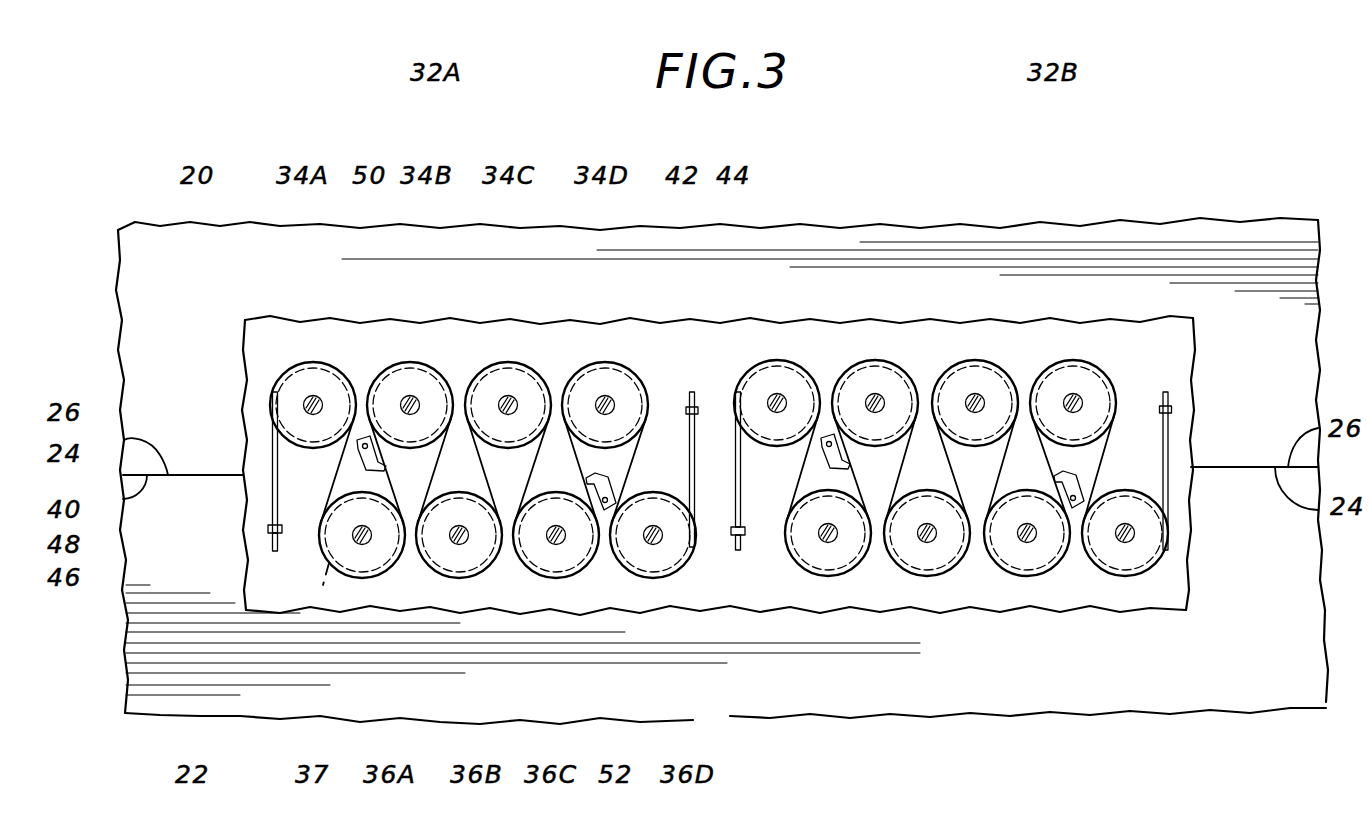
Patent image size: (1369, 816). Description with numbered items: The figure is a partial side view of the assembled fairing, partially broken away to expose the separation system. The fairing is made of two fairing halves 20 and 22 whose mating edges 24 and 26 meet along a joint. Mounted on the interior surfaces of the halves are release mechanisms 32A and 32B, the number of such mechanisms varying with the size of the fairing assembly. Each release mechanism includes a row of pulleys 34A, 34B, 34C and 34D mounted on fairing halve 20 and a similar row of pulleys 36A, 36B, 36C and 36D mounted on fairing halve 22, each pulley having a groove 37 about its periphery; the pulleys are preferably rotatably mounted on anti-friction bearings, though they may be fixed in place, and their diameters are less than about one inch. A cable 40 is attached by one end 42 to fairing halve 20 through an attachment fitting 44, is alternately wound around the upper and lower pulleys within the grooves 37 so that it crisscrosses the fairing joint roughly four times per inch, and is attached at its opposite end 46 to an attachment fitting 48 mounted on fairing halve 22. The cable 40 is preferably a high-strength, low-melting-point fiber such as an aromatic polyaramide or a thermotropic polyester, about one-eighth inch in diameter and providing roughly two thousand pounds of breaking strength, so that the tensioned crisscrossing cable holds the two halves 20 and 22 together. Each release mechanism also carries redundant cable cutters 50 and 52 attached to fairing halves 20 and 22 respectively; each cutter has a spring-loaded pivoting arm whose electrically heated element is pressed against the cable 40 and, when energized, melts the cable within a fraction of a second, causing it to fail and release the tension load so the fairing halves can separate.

The fairing halve 20 is at (195, 227).
The fairing halve 22 is at (197, 757).
The mating edge 24 is at (90, 453).
The mating edge 26 is at (90, 411).
The release mechanism 32A is at (371, 130).
The release mechanism 32B is at (986, 136).
The pulley 34A is at (313, 364).
The pulley 34B is at (415, 363).
The pulley 34C is at (510, 362).
The pulley 34D is at (605, 362).
The pulley 36A is at (365, 580).
The pulley 36B is at (456, 580).
The pulley 36C is at (548, 580).
The pulley 36D is at (657, 578).
The groove 37 is at (323, 585).
The cable 40 is at (272, 504).
The one end of cable 42 is at (689, 394).
The attachment fitting 44 is at (699, 411).
The opposite end of cable 46 is at (273, 545).
The attachment fitting 48 is at (268, 529).
The cable cutter 50 is at (366, 437).
The cable cutter 52 is at (615, 755).